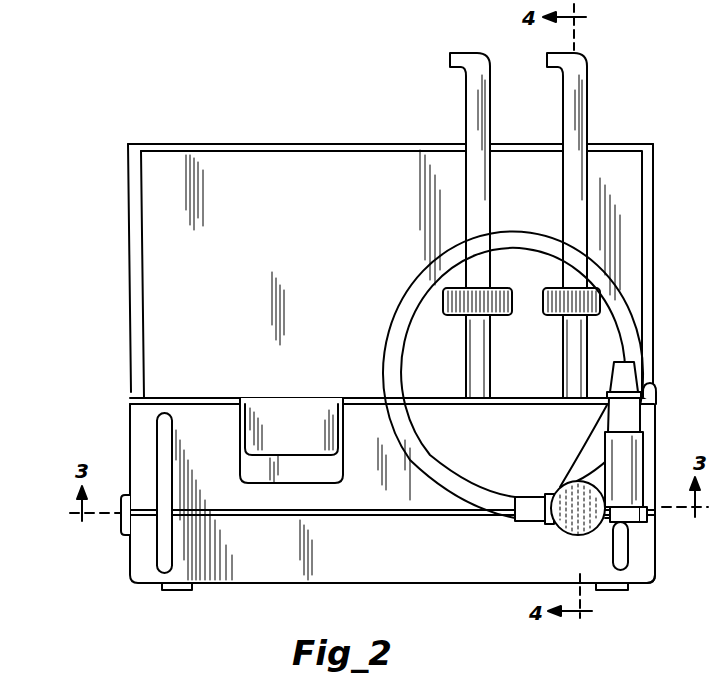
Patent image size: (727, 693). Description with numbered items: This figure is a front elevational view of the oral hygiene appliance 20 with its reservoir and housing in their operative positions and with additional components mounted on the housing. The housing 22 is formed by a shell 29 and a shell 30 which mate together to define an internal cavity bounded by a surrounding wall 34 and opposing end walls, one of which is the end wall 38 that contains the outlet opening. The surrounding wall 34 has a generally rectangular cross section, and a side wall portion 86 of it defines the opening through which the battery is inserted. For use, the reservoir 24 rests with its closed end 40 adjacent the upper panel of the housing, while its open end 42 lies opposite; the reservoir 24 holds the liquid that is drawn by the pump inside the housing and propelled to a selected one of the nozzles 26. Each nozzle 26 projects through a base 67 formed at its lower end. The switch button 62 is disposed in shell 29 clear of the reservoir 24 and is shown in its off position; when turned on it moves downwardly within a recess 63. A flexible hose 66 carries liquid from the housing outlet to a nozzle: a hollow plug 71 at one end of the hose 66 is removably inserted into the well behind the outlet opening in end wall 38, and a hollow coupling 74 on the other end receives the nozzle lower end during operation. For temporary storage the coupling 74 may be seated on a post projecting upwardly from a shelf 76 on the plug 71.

The oral hygiene appliance 20 is at (78, 326).
The housing 22 is at (130, 425).
The reservoir 24 is at (128, 279).
The nozzles 26 is at (473, 108).
The shell 29 is at (657, 410).
The shell 30 is at (656, 560).
The surrounding wall 34 is at (130, 470).
The end wall 38 is at (402, 573).
The closed end of reservoir 40 is at (206, 398).
The open end of reservoir 42 is at (643, 141).
The button 62 is at (338, 438).
The recess 63 is at (343, 468).
The flexible hose 66 is at (507, 240).
The base 67 is at (470, 355).
The plug 71 is at (572, 520).
The hollow coupling 74 is at (632, 455).
The shelf 76 is at (647, 515).
The side wall portion 86 is at (128, 545).